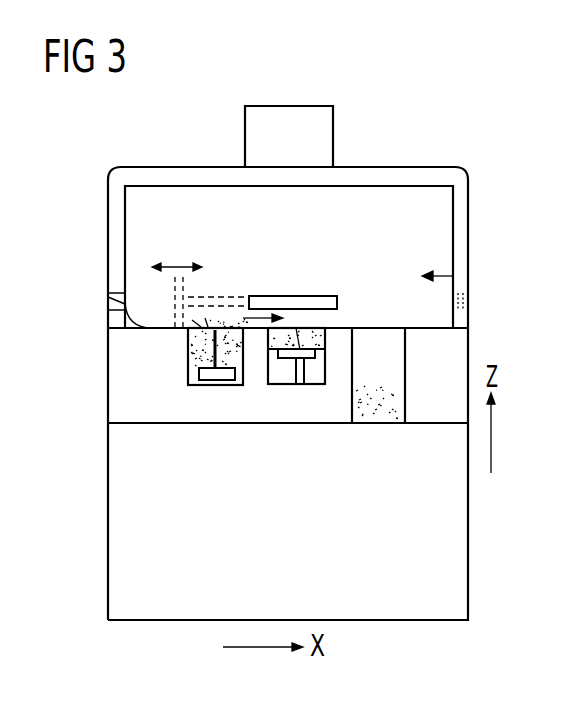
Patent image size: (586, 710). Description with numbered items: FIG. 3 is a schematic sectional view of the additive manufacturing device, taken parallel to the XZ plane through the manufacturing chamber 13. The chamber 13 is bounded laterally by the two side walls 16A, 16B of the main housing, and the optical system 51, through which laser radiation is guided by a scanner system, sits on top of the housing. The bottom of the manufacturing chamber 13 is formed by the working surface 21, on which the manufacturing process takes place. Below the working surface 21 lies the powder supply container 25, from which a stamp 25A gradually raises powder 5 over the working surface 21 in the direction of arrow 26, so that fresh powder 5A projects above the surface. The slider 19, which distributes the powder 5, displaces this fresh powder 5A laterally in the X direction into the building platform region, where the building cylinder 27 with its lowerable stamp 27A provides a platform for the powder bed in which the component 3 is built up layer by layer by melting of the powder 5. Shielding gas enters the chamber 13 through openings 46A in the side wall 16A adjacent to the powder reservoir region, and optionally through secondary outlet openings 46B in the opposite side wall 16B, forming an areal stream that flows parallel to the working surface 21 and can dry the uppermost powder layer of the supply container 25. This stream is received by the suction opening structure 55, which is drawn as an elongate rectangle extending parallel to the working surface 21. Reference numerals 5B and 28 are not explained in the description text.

The 3D component 3 is at (297, 333).
The powder 5 is at (188, 347).
The fresh powder 5A is at (214, 308).
The second component part 5B is at (406, 398).
The manufacturing chamber 13 is at (454, 278).
The side wall 16A is at (113, 205).
The side wall 16B is at (470, 213).
The slider 19 is at (172, 303).
The working surface 21 is at (109, 293).
The powder supply container 25 is at (188, 375).
The stamp 25A is at (196, 386).
The arrow 26 is at (243, 386).
The building cylinder 27 is at (326, 362).
The stamp 27A is at (300, 381).
The contact bar 28 is at (326, 346).
The openings 46A is at (107, 304).
The secondary outlet openings 46B is at (470, 306).
The optical system 51 is at (333, 128).
The suction opening structure 55 is at (270, 295).